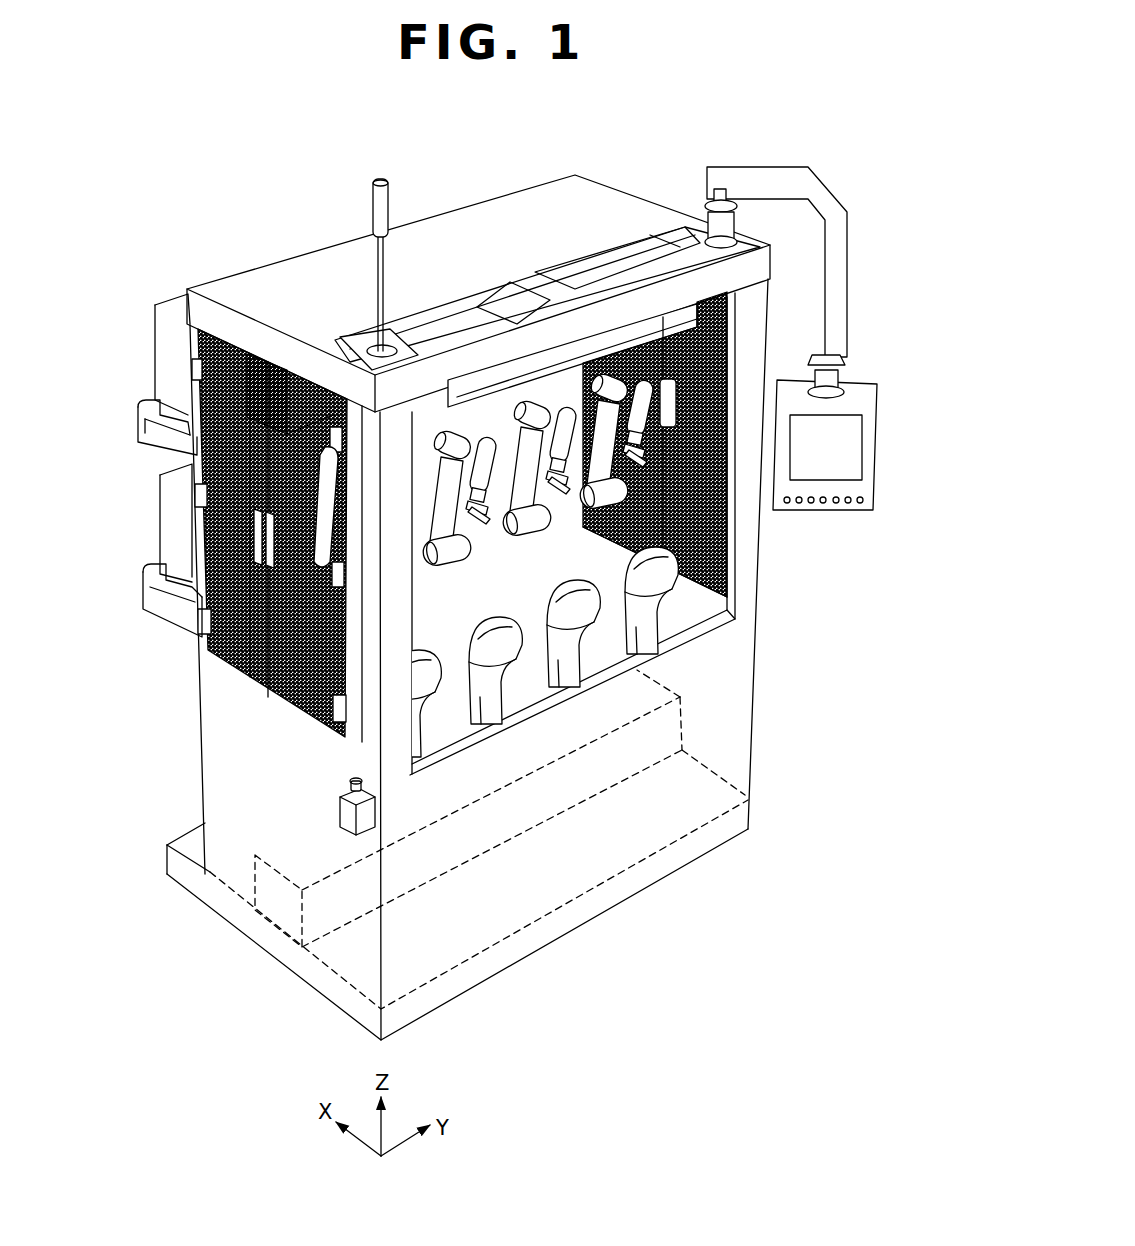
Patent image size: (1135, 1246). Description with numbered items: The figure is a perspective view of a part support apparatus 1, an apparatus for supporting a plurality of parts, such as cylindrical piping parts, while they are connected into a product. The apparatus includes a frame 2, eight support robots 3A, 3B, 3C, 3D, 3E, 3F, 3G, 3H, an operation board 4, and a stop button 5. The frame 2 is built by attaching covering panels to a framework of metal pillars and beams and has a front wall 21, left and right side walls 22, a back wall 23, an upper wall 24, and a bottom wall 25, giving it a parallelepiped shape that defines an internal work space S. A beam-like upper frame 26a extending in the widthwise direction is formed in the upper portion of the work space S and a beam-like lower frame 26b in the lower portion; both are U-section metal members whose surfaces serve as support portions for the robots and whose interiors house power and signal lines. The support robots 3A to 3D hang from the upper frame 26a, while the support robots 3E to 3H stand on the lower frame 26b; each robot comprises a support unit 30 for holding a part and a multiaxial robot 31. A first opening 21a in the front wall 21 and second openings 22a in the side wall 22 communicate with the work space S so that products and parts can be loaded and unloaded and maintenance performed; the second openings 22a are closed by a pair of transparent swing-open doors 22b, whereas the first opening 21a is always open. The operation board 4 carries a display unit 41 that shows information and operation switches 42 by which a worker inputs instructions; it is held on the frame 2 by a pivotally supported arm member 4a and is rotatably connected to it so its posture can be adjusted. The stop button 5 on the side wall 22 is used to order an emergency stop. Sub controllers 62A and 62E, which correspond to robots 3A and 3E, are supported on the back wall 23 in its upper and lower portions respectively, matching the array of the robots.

The part support apparatus 1 is at (256, 129).
The frame 2 is at (525, 172).
The support robot 3A is at (356, 590).
The support robot 3B is at (462, 567).
The support robot 3C is at (534, 540).
The support robot 3D is at (568, 512).
The support robot 3E is at (432, 772).
The support robot 3F is at (496, 735).
The support robot 3G is at (584, 673).
The support robot 3H is at (645, 645).
The operation board 4 is at (874, 383).
The arm member 4a is at (796, 180).
The stop button 5 is at (350, 820).
The front wall 21 is at (744, 776).
The first opening 21a is at (712, 640).
The side wall 22 is at (730, 622).
The second opening 22a is at (714, 598).
The door 22b is at (722, 346).
The back wall 23 is at (200, 762).
The upper wall 24 is at (322, 272).
The bottom wall 25 is at (455, 966).
The upper frame 26a is at (308, 388).
The lower frame 26b is at (606, 798).
The support unit 30 is at (462, 537).
The multiaxial robot 31 is at (448, 410).
The display unit 41 is at (852, 440).
The operation switch 42 is at (800, 505).
The sub controller 62A is at (170, 302).
The sub controller 62E is at (158, 537).
The work space S is at (531, 684).